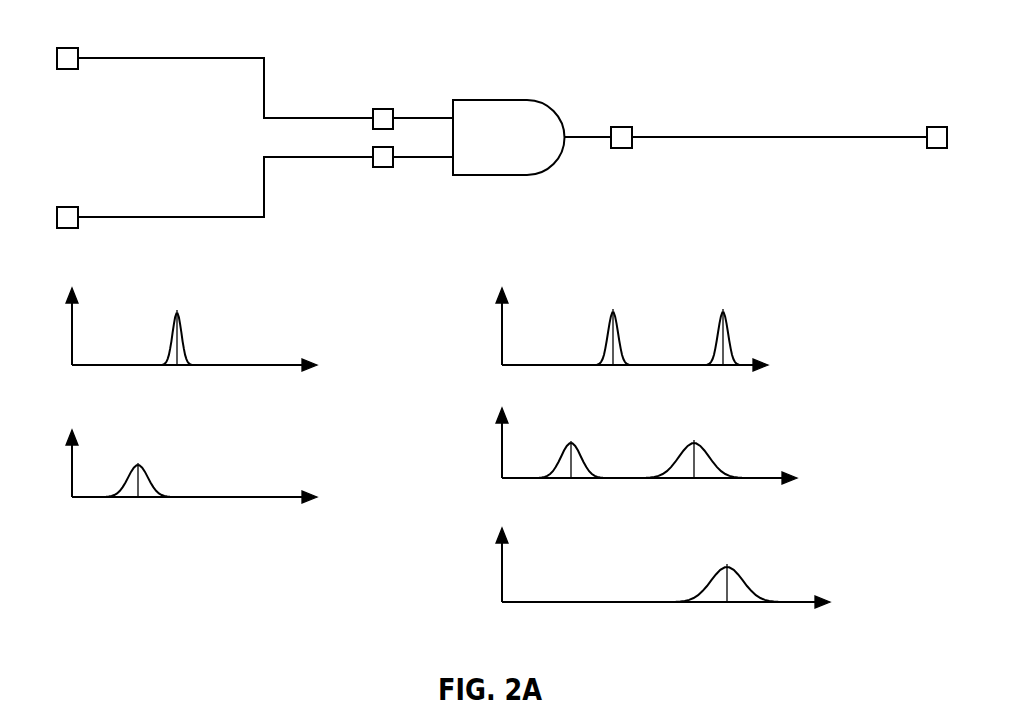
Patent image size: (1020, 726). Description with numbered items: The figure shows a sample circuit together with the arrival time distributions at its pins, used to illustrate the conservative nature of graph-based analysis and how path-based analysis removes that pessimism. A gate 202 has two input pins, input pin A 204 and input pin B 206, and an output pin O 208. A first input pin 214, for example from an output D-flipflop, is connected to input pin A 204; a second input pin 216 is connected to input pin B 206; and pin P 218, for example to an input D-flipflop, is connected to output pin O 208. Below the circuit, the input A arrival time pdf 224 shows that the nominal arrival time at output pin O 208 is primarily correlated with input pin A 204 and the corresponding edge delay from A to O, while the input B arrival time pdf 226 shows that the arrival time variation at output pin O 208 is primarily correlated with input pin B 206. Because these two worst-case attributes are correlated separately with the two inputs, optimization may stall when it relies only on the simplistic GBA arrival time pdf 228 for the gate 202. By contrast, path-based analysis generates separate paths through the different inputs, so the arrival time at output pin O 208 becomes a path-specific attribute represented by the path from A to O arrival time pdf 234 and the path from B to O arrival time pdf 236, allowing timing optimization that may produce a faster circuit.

The gate 202 is at (498, 100).
The input pin A 204 is at (395, 112).
The input pin B 206 is at (395, 164).
The output pin O 208 is at (617, 127).
The pin I1 214 is at (64, 70).
The pin I2 216 is at (64, 206).
The pin P 218 is at (935, 127).
The input A arrival time pdf 224 is at (185, 340).
The input B arrival time pdf 226 is at (150, 482).
The GBA arrival time pdf 228 is at (778, 573).
The path from A to O arrival time pdf 234 is at (742, 327).
The path from B to O arrival time pdf 236 is at (750, 452).